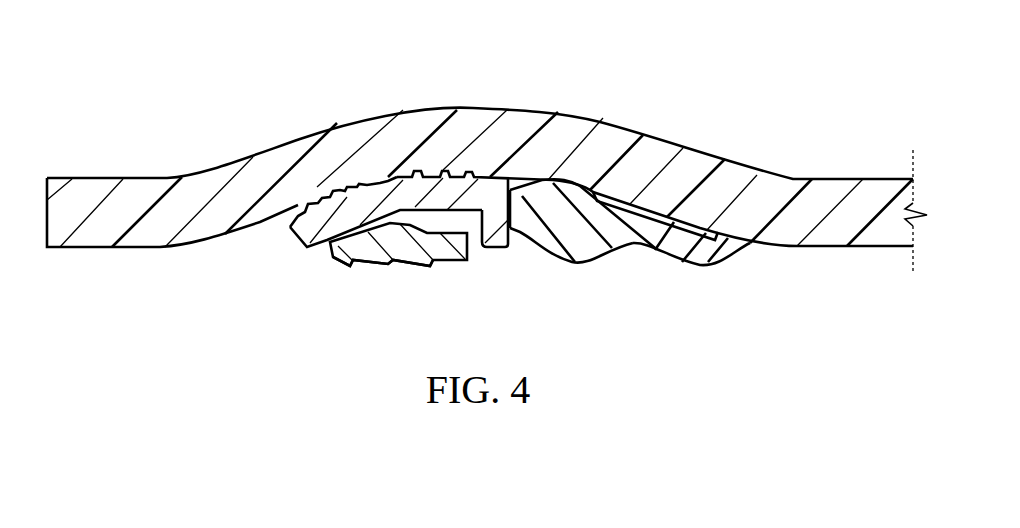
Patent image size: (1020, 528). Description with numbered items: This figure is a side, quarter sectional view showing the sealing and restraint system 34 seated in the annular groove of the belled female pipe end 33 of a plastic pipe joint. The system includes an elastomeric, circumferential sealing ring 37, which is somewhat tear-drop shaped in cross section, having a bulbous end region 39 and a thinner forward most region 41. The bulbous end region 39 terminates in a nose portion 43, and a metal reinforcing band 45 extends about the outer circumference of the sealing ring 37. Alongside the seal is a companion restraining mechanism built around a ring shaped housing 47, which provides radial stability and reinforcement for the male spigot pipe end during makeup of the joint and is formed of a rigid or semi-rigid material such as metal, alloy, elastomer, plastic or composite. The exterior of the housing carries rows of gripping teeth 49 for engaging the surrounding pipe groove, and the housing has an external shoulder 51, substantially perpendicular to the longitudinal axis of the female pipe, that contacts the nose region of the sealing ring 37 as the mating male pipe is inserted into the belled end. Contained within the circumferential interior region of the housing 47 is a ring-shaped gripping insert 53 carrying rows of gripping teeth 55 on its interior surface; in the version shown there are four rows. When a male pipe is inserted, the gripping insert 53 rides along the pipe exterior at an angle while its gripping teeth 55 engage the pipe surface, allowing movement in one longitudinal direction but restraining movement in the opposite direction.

The belled female pipe end 33 is at (282, 147).
The sealing and restraint system 34 is at (521, 288).
The sealing ring 37 is at (597, 260).
The bulbous end region 39 is at (543, 257).
The forward most region 41 is at (687, 263).
The nose portion 43 is at (503, 207).
The metal reinforcing band 45 is at (640, 213).
The ring shaped housing 47 is at (453, 190).
The gripping teeth 49 is at (407, 172).
The external shoulder 51 is at (493, 250).
The gripping insert 53 is at (400, 260).
The gripping teeth 55 is at (353, 265).